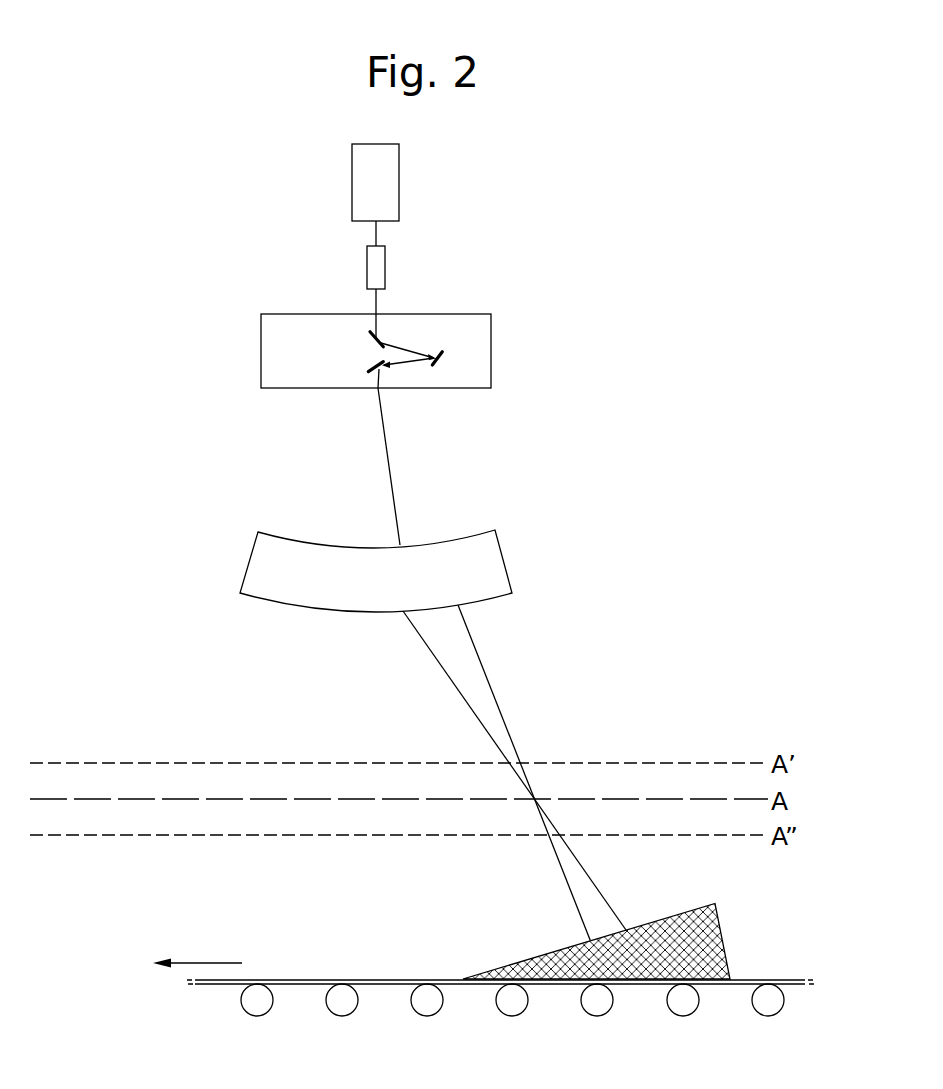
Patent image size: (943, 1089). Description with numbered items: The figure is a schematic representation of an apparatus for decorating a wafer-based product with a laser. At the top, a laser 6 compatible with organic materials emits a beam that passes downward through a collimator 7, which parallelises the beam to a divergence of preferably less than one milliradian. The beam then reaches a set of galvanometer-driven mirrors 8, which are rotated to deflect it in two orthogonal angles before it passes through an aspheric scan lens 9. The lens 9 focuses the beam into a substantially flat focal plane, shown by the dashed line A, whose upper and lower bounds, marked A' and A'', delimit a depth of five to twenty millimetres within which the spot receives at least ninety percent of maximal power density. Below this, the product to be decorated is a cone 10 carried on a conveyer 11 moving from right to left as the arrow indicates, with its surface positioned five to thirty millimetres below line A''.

The laser 6 is at (352, 179).
The collimator 7 is at (367, 265).
The galvanometer-driven mirrors 8 is at (499, 337).
The aspheric scan lens 9 is at (507, 565).
The cone 10 is at (727, 930).
The conveyer 11 is at (370, 980).